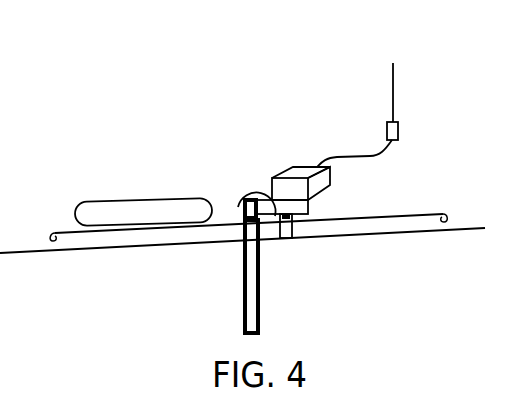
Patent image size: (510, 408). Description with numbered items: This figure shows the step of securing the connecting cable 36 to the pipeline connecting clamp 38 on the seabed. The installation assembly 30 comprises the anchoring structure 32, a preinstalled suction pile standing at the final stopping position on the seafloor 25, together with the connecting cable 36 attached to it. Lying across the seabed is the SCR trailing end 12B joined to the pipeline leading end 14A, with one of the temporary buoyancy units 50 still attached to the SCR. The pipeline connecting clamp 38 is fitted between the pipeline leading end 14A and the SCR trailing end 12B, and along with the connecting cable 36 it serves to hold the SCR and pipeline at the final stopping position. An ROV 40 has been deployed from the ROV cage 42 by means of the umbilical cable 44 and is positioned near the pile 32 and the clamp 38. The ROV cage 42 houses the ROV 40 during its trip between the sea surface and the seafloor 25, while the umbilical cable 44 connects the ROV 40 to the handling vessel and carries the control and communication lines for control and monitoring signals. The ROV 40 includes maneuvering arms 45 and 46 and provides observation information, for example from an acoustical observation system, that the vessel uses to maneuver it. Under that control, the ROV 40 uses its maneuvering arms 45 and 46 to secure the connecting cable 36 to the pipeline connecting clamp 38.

The installation assembly 30 is at (123, 98).
The temporary buoyancy unit 50 is at (138, 212).
The SCR trailing end 12B is at (97, 240).
The seafloor 25 is at (38, 292).
The anchoring structure 32 is at (242, 290).
The connecting cable 36 is at (244, 198).
The pipeline connecting clamp 38 is at (287, 238).
The ROV 40 is at (297, 175).
The maneuvering arm 45 is at (272, 200).
The maneuvering arm 46 is at (308, 206).
The umbilical cable 44 is at (362, 155).
The ROV cage 42 is at (399, 130).
The pipeline leading end 14A is at (422, 226).